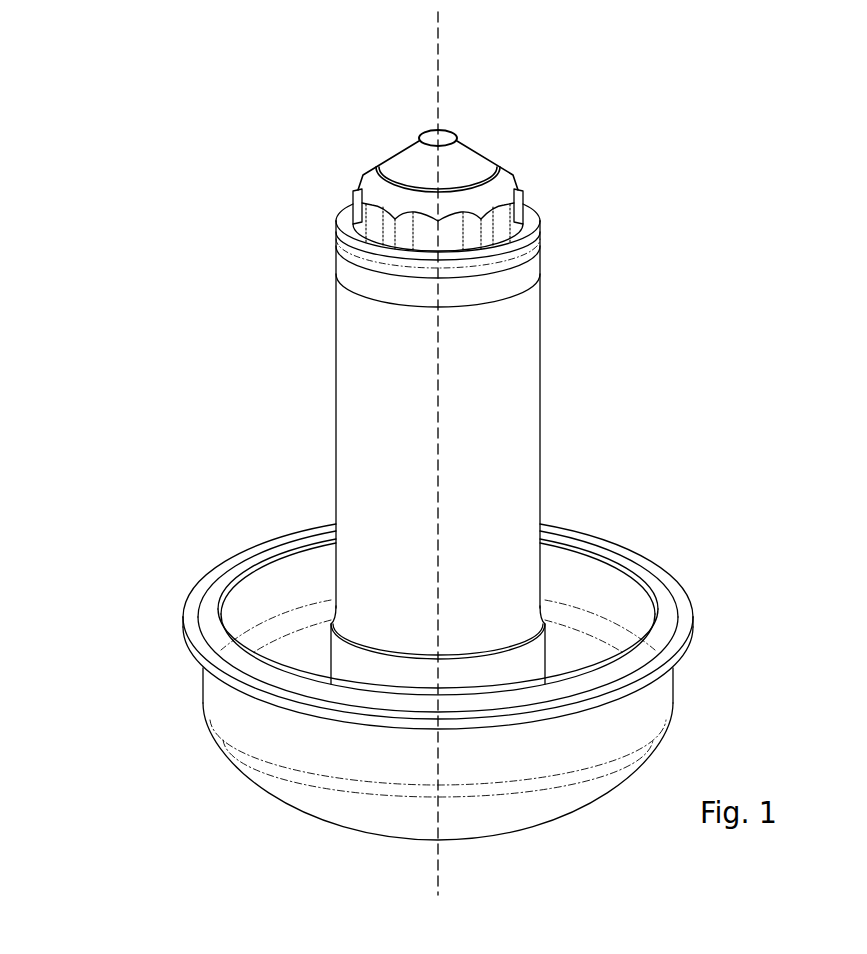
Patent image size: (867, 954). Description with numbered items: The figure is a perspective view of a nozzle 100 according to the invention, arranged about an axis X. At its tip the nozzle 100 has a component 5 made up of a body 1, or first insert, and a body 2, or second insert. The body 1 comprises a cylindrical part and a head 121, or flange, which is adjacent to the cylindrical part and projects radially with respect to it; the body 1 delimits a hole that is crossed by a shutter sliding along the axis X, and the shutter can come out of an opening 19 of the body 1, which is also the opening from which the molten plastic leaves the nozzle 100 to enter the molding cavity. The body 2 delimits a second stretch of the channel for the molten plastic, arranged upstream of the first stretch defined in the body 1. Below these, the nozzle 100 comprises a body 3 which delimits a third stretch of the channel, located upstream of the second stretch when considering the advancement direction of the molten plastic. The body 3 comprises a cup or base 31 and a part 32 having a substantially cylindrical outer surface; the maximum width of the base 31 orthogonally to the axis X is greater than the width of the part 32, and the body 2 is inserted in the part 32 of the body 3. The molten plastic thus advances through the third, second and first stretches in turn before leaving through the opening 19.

The nozzle 100 is at (170, 166).
The axis X is at (440, 50).
The body 1 is at (415, 99).
The head 121 is at (410, 153).
The opening 19 is at (458, 138).
The body 2 is at (368, 183).
The component 5 is at (490, 150).
The body 3 is at (330, 375).
The part 32 is at (351, 495).
The base 31 is at (215, 705).